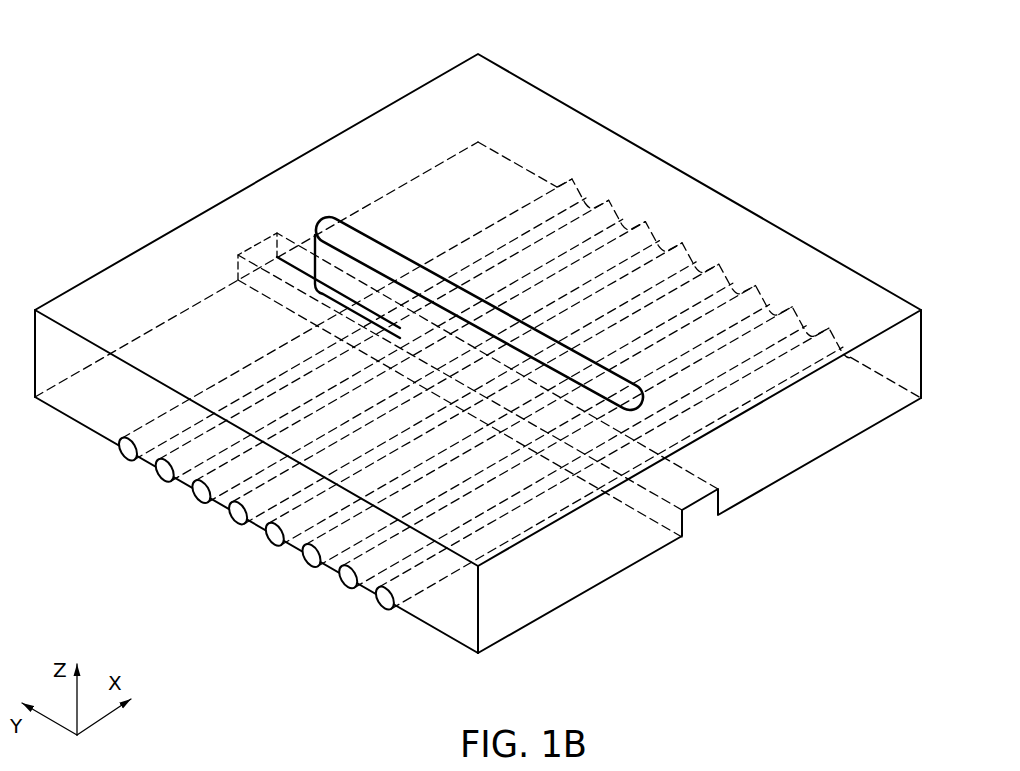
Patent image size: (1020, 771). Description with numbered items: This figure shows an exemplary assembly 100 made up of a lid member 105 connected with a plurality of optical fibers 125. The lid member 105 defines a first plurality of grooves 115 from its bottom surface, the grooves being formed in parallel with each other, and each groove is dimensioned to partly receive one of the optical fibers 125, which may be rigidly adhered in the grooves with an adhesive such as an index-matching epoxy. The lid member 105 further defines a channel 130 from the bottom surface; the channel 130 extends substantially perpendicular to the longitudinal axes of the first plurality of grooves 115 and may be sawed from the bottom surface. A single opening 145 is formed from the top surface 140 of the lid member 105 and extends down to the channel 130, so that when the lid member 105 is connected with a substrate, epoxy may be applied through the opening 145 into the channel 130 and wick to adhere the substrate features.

The assembly 100 is at (142, 78).
The lid member 105 is at (208, 175).
The first plurality of grooves 115 is at (411, 647).
The plurality of optical fibers 125 is at (486, 412).
The channel 130 is at (705, 518).
The top surface 140 is at (185, 256).
The opening 145 is at (355, 242).